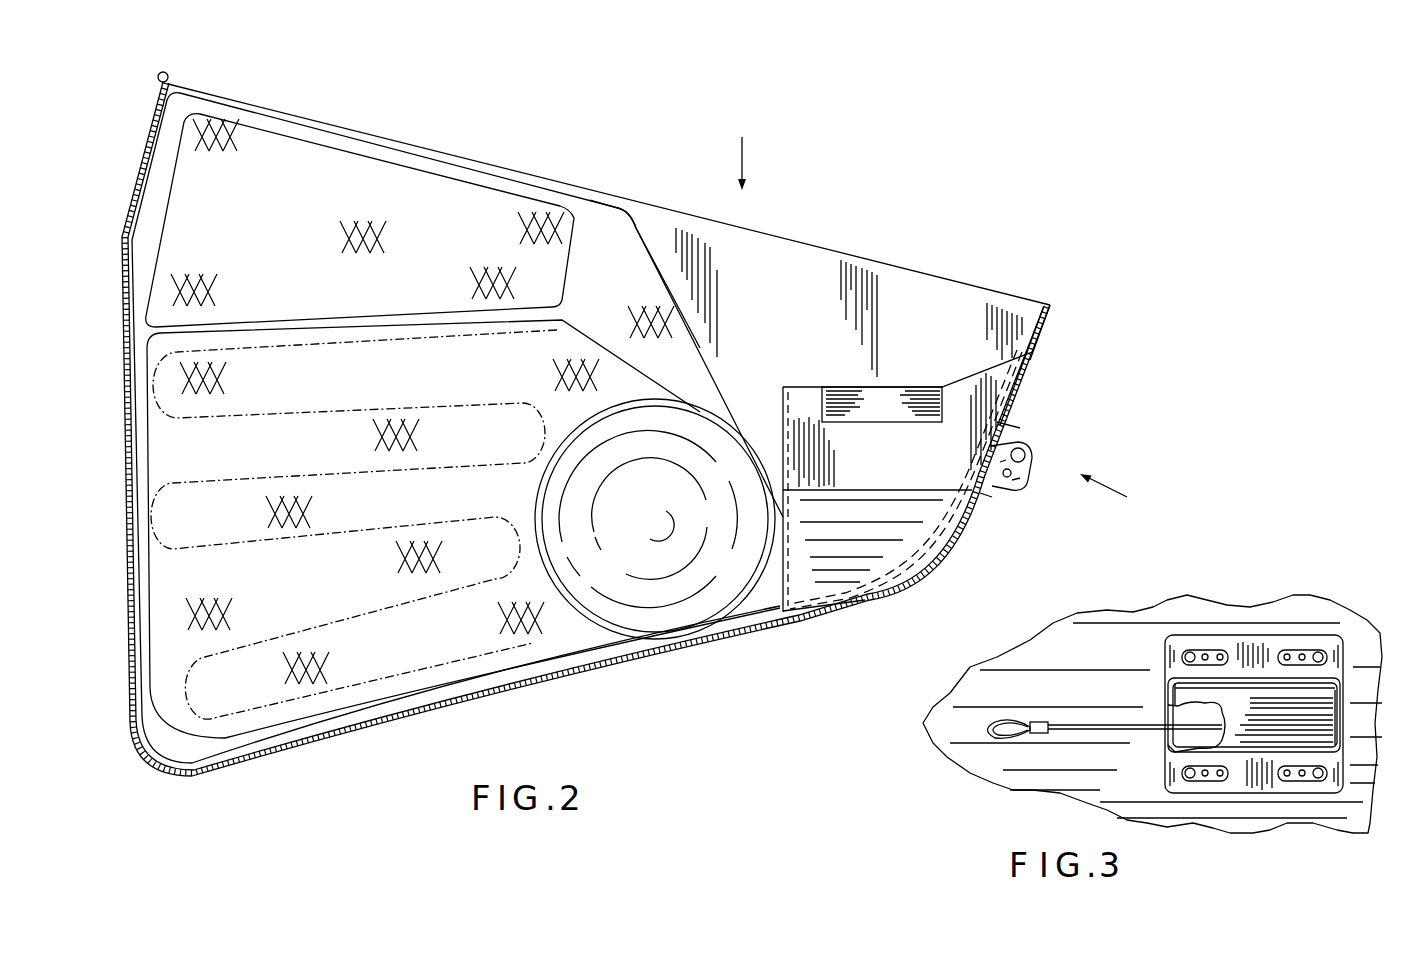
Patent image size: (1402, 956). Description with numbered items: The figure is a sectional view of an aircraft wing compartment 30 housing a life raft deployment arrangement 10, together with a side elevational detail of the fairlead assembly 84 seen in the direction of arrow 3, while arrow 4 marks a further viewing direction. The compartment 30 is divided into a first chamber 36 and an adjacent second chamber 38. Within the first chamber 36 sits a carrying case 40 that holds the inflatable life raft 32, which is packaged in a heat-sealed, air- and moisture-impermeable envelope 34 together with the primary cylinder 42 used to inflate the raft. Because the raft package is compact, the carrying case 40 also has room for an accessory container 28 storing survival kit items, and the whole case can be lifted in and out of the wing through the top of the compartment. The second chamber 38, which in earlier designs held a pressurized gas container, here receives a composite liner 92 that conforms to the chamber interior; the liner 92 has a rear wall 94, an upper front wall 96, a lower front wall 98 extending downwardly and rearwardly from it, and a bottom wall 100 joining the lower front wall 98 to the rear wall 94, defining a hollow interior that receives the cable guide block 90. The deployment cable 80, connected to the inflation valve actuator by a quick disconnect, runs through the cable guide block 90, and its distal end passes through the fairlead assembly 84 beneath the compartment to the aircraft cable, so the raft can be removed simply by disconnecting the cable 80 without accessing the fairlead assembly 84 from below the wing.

In FIG. 2, the deployment arrangement 10 is at (868, 207).
In FIG. 2, the accessory container 28 is at (408, 180).
In FIG. 2, the compartment 30 is at (1052, 322).
In FIG. 2, the inflatable life raft 32 is at (535, 644).
In FIG. 2, the envelope 34 is at (597, 338).
In FIG. 2, the first chamber 36 is at (660, 230).
In FIG. 2, the second chamber 38 is at (808, 385).
In FIG. 2, the carrying case 40 is at (632, 212).
In FIG. 2, the primary cylinder 42 is at (677, 606).
In FIG. 2, the fairlead assembly 84 is at (1010, 478).
In FIG. 3, the fairlead assembly 84 is at (1255, 783).
In FIG. 2, the cable guide block 90 is at (803, 530).
In FIG. 2, the liner 92 is at (975, 393).
In FIG. 2, the rear wall 94 is at (783, 410).
In FIG. 2, the upper front wall 96 is at (1023, 378).
In FIG. 2, the lower front wall 98 is at (925, 548).
In FIG. 2, the bottom wall 100 is at (837, 607).
In FIG. 3, the deployment cable 80 is at (1075, 725).
In FIG. 2, the arrow 3 is at (1106, 480).
In FIG. 2, the arrow 4 is at (753, 156).